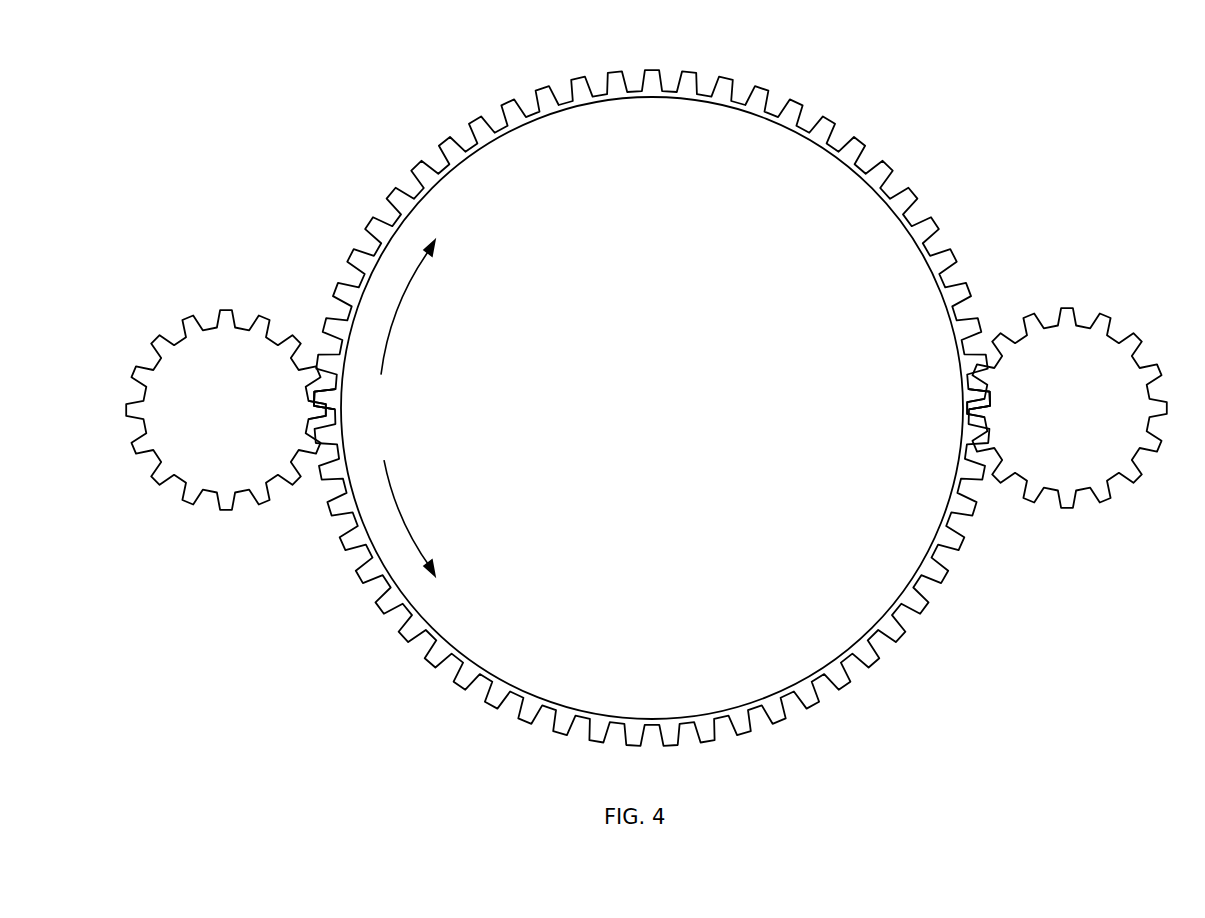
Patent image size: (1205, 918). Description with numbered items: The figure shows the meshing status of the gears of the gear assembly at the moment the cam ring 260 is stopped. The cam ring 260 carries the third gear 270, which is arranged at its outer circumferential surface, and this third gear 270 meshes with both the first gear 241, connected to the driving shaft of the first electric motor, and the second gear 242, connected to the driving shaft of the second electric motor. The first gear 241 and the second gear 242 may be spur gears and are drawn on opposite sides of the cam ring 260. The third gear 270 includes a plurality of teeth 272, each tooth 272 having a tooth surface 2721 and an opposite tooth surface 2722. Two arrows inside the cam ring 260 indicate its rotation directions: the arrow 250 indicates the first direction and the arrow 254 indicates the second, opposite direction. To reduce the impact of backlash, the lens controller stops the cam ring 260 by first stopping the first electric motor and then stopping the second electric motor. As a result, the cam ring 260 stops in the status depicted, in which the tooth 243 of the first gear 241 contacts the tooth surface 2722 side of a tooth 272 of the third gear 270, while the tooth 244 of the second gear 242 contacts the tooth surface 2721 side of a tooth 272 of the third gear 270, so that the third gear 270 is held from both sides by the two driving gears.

The first gear 241 is at (197, 345).
The second gear 242 is at (1100, 340).
The tooth 243 is at (315, 420).
The tooth 244 is at (990, 420).
The arrow 250 is at (405, 494).
The arrow 254 is at (405, 302).
The cam ring 260 is at (547, 150).
The third gear 270 is at (777, 105).
The tooth 272 is at (332, 398).
The tooth surface 2721 is at (990, 410).
The tooth surface 2722 is at (318, 410).